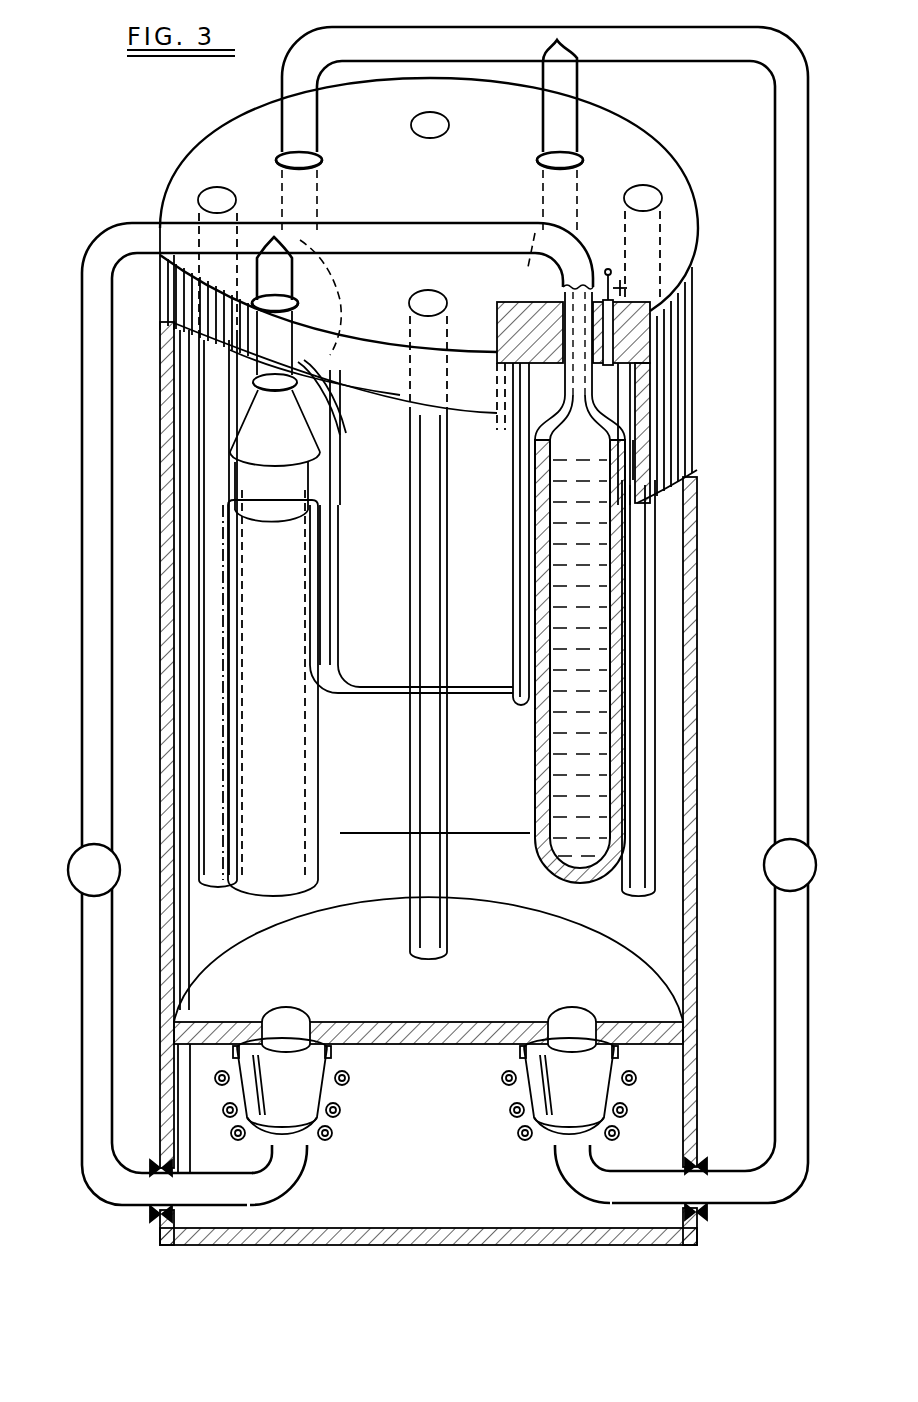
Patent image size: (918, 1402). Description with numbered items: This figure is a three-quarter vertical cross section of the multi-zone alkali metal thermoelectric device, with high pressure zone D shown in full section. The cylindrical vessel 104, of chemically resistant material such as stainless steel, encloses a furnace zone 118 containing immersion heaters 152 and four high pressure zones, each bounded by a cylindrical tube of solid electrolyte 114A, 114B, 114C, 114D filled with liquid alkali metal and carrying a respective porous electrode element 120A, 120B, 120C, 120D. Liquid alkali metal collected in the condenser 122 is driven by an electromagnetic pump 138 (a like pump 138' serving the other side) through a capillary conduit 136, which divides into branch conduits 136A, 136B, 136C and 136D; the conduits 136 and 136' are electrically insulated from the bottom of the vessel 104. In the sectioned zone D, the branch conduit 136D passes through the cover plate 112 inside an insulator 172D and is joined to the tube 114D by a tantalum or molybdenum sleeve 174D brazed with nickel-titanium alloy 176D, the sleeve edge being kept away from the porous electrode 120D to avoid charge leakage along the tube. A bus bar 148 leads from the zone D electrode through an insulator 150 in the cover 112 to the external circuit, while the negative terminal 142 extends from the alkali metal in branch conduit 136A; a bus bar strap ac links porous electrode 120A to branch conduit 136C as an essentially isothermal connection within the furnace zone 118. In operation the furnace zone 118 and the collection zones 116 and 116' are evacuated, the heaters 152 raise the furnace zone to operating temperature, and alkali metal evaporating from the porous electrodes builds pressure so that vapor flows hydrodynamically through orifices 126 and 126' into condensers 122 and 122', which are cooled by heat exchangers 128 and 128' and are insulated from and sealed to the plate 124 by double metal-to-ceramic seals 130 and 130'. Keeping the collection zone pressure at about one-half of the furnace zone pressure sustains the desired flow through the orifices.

The cylindrical vessel 104 is at (695, 822).
The cover plate 112 is at (697, 254).
The cylindrical tube of electrolyte solid 114A is at (343, 346).
The cylindrical tube of electrolyte solid 114B is at (508, 405).
The cylindrical tube of electrolyte solid 114C is at (323, 500).
The cylindrical tube of electrolyte solid 114D is at (615, 637).
The collection zone 116 is at (333, 1082).
The collection zone 116' is at (528, 1084).
The furnace zone 118 is at (505, 800).
The porous electrode element 120A is at (340, 455).
The porous electrode element 120B is at (513, 645).
The porous electrode element 120C is at (322, 770).
The porous electrode element 120D is at (628, 578).
The condenser 122 is at (319, 1175).
The condenser 122' is at (550, 1168).
The plate 124 is at (452, 1022).
The orifice 126 is at (310, 1013).
The orifice 126' is at (582, 1006).
The heat exchanger 128 is at (309, 1111).
The heat exchanger 128' is at (539, 1116).
The double metal-to-ceramic seal 130 is at (323, 1061).
The double metal-to-ceramic seal 130' is at (525, 1061).
The capillary conduit 136 is at (282, 714).
The capillary conduit 136' is at (709, 646).
The branch capillary conduit 136A is at (318, 132).
The pipe leg 136B is at (550, 113).
The branch capillary conduit 136C is at (278, 280).
The branch capillary conduit 136D is at (540, 262).
The electromagnetic pump 138 is at (71, 894).
The pressure gauge 138' is at (768, 885).
The negative terminal 142 is at (516, 5).
The bus bar 148 is at (627, 390).
The insulator 150 is at (618, 296).
The immersion heaters 152 is at (220, 195).
The insulator 172D is at (530, 343).
The sleeve 174D is at (622, 424).
The nickel-titanium brazing alloy 176D is at (620, 447).
The bus bar strap ac is at (326, 405).